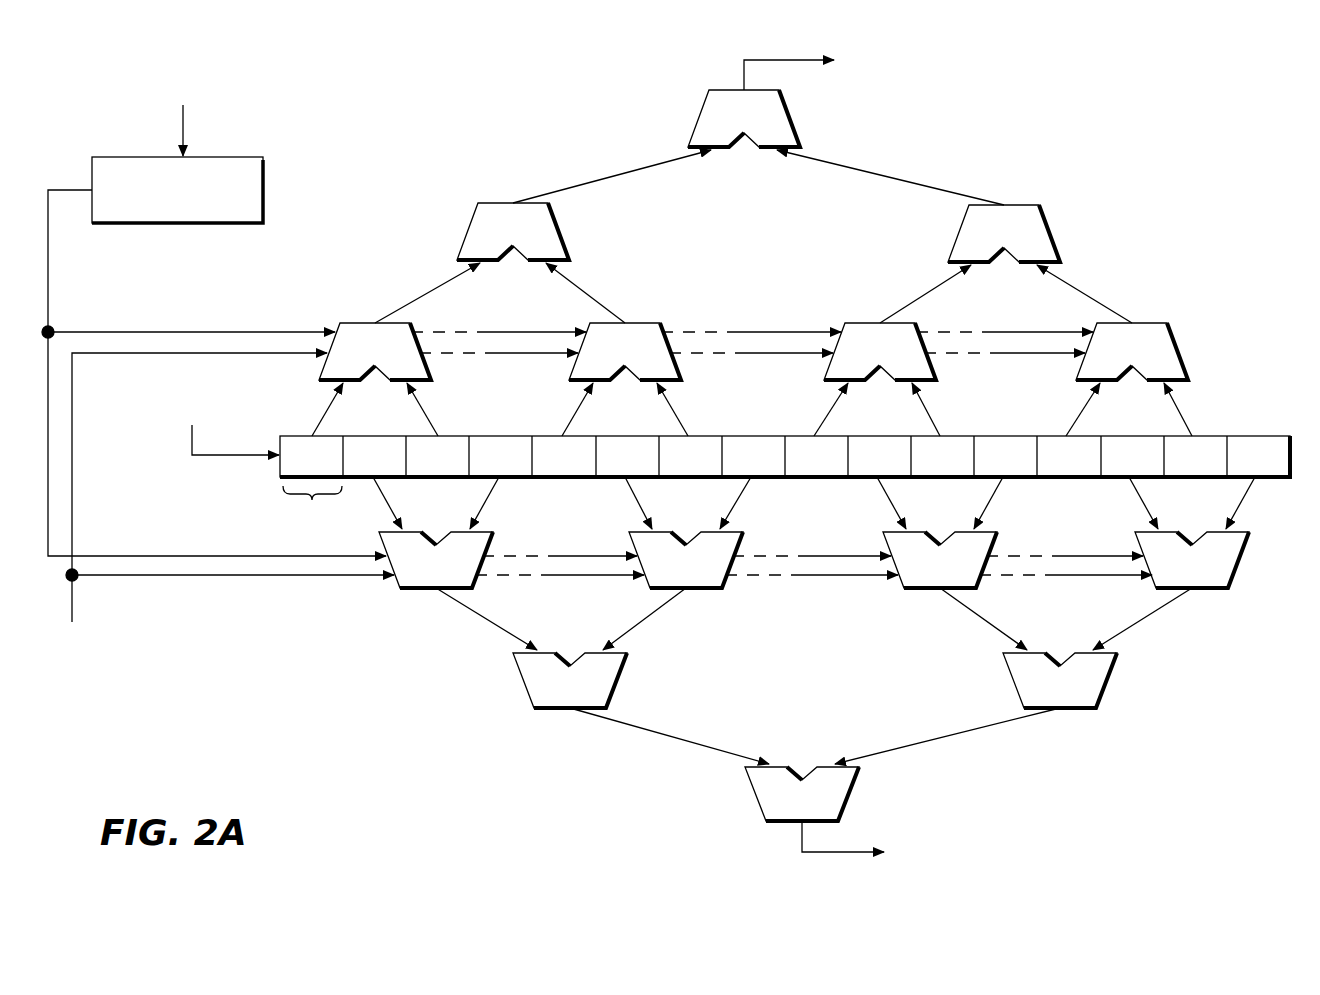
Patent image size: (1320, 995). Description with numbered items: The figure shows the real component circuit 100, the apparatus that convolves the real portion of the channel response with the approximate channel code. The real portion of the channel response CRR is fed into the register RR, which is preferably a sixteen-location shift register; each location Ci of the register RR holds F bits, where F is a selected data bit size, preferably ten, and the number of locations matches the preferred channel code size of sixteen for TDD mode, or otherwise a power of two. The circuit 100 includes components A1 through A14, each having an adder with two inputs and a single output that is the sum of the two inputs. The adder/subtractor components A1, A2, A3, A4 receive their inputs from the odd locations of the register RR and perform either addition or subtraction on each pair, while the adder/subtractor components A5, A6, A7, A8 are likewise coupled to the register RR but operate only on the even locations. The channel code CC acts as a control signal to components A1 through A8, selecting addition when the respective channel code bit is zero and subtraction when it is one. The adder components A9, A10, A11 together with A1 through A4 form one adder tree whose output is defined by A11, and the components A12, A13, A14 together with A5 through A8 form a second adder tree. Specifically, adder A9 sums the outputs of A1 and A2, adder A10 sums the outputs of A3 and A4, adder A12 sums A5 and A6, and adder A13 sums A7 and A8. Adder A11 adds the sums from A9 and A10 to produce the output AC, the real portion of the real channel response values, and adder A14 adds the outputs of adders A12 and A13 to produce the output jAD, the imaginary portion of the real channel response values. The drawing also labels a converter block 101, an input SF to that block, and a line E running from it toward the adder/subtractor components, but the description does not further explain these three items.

The real component circuit 100 is at (304, 56).
The converter 101 is at (263, 160).
The spreading factor input SF is at (177, 114).
The enable signal line E is at (48, 265).
The channel code CC is at (72, 600).
The real portion of the channel response CRR is at (205, 455).
The register RR is at (1272, 436).
The register location Ci is at (312, 508).
The adder/subtractor component A1 is at (418, 590).
The adder/subtractor component A2 is at (728, 590).
The adder/subtractor component A3 is at (912, 590).
The adder/subtractor component A4 is at (1236, 590).
The adder/subtractor component A5 is at (357, 322).
The adder/subtractor component A6 is at (658, 322).
The adder/subtractor component A7 is at (846, 322).
The adder/subtractor component A8 is at (1155, 322).
The adder A9 is at (535, 706).
The adder A10 is at (1100, 706).
The adder A11 is at (755, 797).
The adder A12 is at (496, 203).
The adder A13 is at (1025, 205).
The adder A14 is at (698, 120).
The imaginary portion of the real channel response values jAD is at (742, 60).
The real portion of the real channel response values AC is at (800, 842).